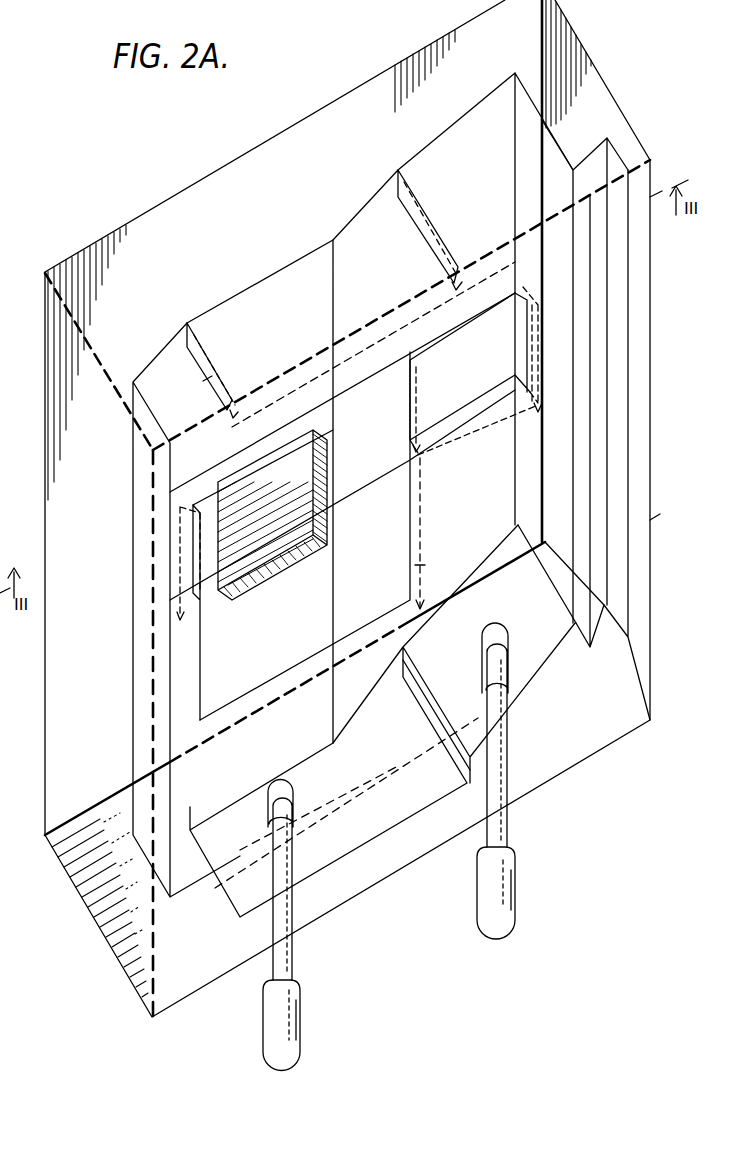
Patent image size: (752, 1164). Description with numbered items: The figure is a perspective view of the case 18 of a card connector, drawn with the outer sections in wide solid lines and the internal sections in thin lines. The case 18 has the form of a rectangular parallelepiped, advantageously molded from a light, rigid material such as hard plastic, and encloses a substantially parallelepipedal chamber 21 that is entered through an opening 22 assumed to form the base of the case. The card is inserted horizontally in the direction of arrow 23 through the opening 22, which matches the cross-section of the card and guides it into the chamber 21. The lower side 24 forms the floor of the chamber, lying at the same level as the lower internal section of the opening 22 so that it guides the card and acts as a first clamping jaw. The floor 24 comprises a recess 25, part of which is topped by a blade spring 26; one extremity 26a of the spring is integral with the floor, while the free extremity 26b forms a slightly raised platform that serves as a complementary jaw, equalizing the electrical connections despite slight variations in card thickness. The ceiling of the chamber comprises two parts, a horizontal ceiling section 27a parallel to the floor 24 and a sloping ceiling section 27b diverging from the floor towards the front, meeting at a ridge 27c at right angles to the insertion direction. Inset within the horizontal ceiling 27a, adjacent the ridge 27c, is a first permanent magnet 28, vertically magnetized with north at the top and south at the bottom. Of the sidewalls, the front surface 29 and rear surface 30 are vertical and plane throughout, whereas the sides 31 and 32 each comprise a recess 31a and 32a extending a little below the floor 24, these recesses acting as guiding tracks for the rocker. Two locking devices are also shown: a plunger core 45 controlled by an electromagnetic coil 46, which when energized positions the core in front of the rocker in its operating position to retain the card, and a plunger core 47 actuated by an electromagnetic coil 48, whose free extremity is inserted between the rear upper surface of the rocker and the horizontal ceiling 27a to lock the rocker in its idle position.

The case 18 is at (333, 99).
The chamber 21 is at (143, 362).
The opening 22 is at (620, 572).
The arrow 23 is at (690, 502).
The lower side 24 is at (538, 678).
The recess 25 is at (422, 562).
The blade spring 26 is at (360, 490).
The extremity of spring 26a is at (200, 600).
The free extremity 26b is at (441, 403).
The ceiling section 27a is at (178, 352).
The ceiling section 27b is at (468, 112).
The ridge 27c is at (340, 285).
The first permanent magnet 28 is at (272, 574).
The front surface 29 is at (556, 143).
The rear surface 30 is at (133, 812).
The side 31 is at (420, 660).
The recess 31a is at (420, 696).
The side 32 is at (214, 376).
The recess 32a is at (205, 338).
The plunger core 45 is at (498, 830).
The electromagnetic coil 46 is at (518, 890).
The plunger core 47 is at (287, 960).
The electromagnetic coil 48 is at (300, 1015).